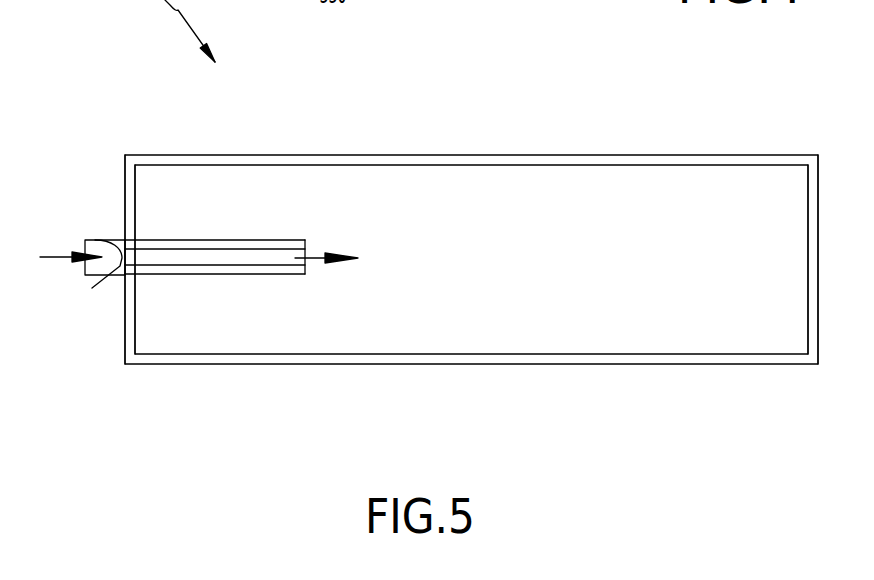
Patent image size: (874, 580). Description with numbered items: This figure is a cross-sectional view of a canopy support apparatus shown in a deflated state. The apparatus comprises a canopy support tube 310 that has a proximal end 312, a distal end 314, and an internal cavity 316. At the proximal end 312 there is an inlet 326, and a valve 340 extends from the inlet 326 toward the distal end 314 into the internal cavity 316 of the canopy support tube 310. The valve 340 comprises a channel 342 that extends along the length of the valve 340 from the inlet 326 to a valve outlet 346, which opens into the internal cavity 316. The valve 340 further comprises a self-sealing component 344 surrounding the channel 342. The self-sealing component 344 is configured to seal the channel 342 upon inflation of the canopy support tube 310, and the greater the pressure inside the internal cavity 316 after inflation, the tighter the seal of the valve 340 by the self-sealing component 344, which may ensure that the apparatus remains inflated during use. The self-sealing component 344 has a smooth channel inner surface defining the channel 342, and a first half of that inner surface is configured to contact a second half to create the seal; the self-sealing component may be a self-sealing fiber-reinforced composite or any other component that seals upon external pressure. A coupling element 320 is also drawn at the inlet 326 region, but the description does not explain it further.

The canopy support tube 310 is at (630, 163).
The proximal end 312 is at (125, 155).
The distal end 314 is at (818, 190).
The internal cavity 316 is at (657, 271).
The light input coupler 320 is at (105, 240).
The inlet 326 is at (106, 280).
The valve 340 is at (257, 254).
The channel 342 is at (182, 260).
The self-sealing component 344 is at (290, 240).
The valve outlet 346 is at (307, 257).